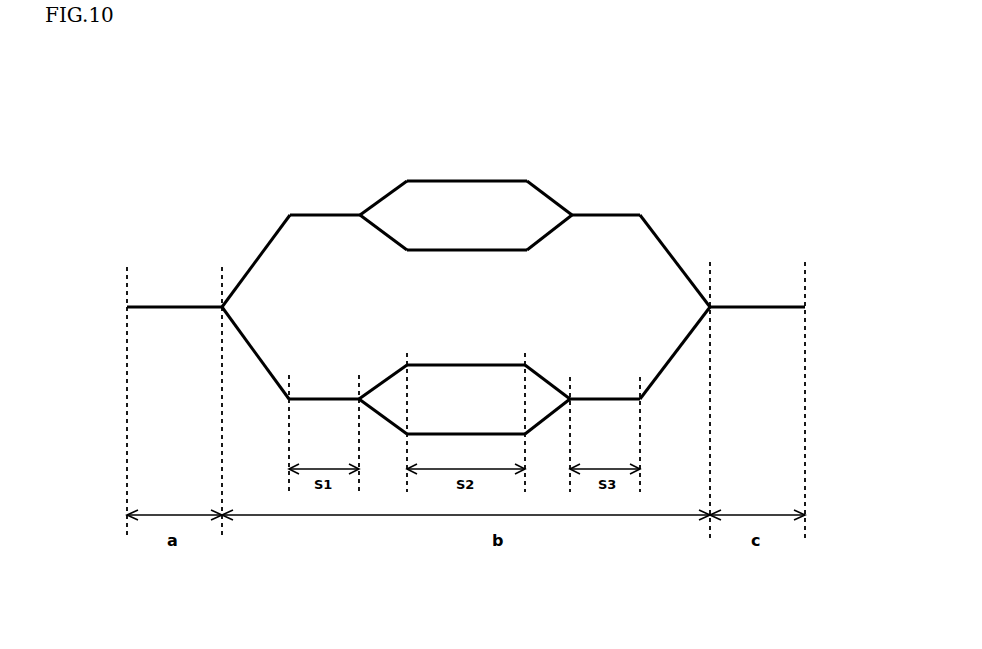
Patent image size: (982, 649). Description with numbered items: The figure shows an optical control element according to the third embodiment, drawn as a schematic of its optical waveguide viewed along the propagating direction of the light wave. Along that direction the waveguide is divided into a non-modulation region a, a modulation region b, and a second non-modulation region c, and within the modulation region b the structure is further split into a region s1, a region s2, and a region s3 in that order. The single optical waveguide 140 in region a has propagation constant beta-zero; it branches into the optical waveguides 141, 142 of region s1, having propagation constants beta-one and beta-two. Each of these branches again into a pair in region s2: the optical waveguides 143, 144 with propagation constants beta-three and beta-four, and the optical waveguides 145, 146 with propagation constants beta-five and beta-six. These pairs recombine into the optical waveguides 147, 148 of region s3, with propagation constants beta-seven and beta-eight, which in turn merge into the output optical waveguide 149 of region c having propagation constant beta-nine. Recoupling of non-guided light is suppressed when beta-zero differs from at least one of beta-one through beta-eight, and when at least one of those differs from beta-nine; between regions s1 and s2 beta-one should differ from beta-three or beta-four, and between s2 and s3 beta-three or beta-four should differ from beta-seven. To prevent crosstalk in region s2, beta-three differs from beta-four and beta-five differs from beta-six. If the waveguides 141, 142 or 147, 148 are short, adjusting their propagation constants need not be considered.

The optical waveguide 140 is at (150, 307).
The optical waveguide 141 is at (313, 215).
The optical waveguide 142 is at (300, 399).
The optical waveguide 143 is at (499, 181).
The optical waveguide 144 is at (502, 250).
The optical waveguide 145 is at (502, 365).
The optical waveguide 146 is at (502, 434).
The optical waveguide 147 is at (632, 215).
The optical waveguide 148 is at (615, 399).
The optical waveguide 149 is at (777, 307).